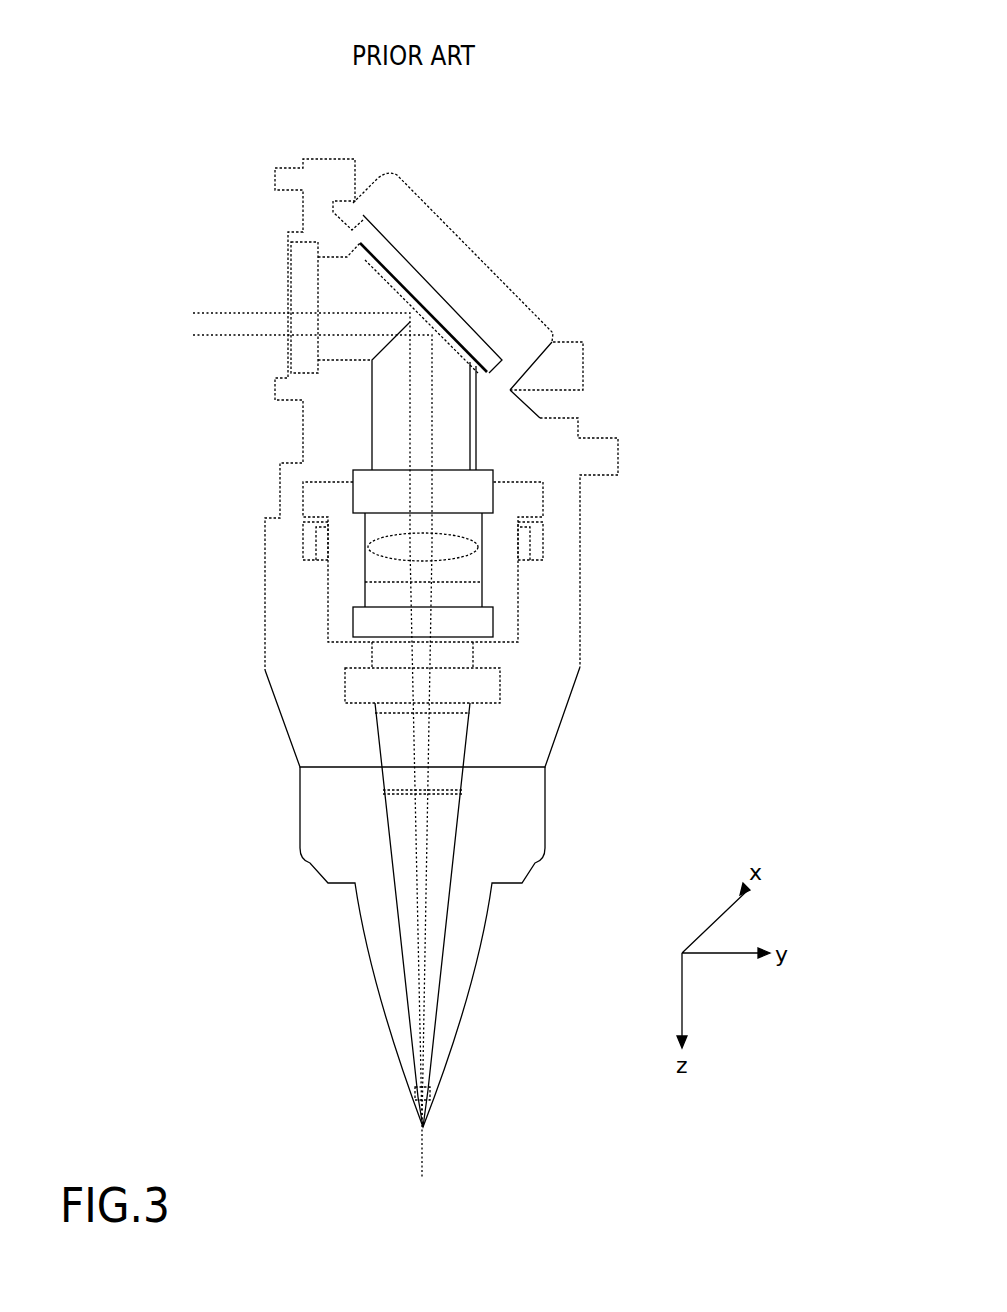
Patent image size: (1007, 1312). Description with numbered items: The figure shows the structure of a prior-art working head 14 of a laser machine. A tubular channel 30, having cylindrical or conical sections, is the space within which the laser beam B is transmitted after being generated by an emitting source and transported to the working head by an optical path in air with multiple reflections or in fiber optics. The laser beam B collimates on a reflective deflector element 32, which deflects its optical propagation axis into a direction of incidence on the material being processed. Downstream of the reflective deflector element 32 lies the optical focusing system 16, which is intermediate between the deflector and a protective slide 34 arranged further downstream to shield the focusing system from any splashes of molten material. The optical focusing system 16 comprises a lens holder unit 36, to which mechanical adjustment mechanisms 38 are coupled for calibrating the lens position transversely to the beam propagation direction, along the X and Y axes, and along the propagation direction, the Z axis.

The working head 14 is at (672, 157).
The tubular channel 30 is at (370, 312).
The reflective deflector element 32 is at (477, 333).
The lens holder unit 36 is at (533, 497).
The mechanical adjustment mechanisms 38 is at (533, 547).
The optical focusing system 16 is at (457, 555).
The protective slide 34 is at (463, 792).
The laser beam B is at (215, 300).